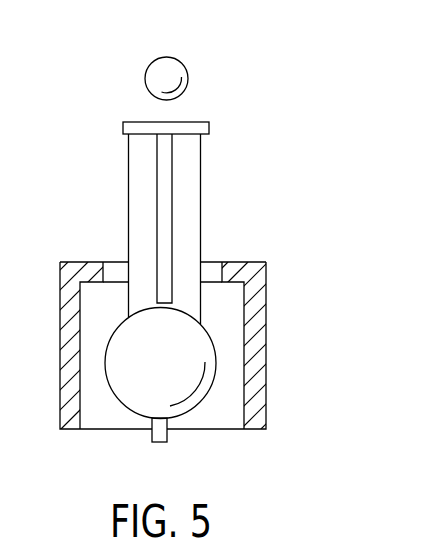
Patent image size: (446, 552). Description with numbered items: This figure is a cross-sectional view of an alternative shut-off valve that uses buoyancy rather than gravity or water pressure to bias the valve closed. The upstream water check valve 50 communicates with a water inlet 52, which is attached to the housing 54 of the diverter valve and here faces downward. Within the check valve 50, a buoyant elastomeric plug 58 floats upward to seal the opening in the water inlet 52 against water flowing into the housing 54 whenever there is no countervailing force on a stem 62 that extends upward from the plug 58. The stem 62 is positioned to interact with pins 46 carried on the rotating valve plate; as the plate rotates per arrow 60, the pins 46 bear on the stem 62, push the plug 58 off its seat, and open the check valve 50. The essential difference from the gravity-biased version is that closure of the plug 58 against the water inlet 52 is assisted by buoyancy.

The pins 46 is at (151, 94).
The upstream water check valve 50 is at (214, 302).
The water inlet 52 is at (245, 430).
The housing 54 is at (132, 47).
The buoyant elastomeric plug 58 is at (132, 387).
The arrow 60 is at (192, 98).
The stem 62 is at (172, 217).